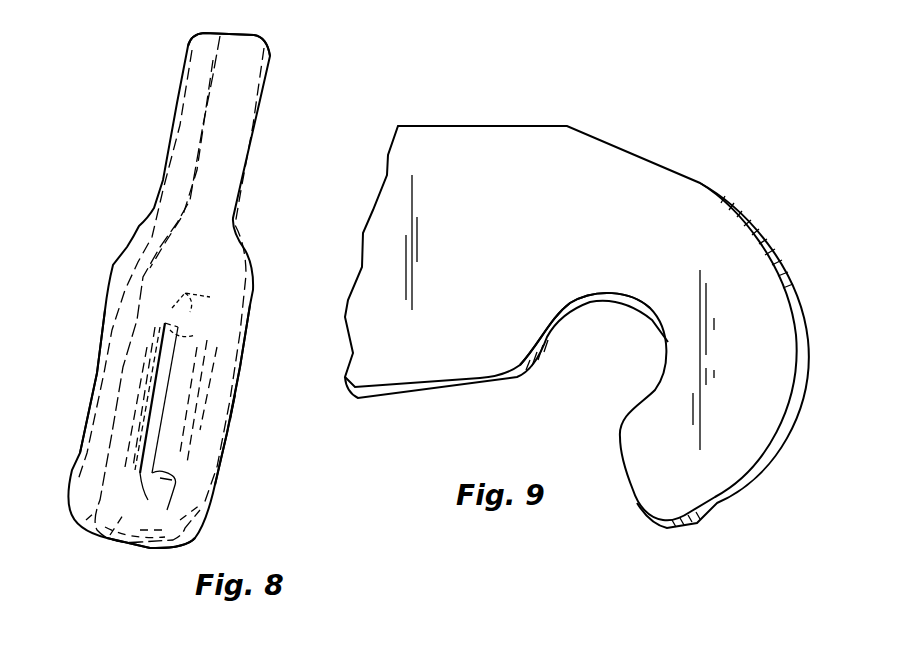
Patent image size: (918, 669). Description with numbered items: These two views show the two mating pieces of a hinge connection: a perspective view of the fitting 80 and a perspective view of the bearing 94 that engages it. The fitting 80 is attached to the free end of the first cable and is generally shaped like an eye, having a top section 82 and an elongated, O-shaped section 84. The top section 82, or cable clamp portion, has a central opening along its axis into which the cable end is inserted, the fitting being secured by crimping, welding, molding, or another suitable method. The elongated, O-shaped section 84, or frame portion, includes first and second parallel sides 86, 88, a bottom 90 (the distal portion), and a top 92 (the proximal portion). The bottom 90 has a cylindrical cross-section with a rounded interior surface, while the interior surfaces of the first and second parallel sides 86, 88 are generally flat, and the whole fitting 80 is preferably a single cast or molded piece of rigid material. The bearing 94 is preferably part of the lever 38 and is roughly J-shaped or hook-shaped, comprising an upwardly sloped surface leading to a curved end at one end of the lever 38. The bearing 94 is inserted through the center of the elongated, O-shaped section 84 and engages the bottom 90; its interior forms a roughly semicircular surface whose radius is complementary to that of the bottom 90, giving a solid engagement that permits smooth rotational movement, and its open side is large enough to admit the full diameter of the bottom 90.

In FIG. 8, the fitting 80 is at (281, 128).
In FIG. 8, the top section 82 is at (250, 82).
In FIG. 8, the elongated, O-shaped section 84 is at (241, 355).
In FIG. 8, the first parallel side 86 is at (96, 352).
In FIG. 8, the second parallel side 88 is at (229, 432).
In FIG. 8, the bottom 90 is at (141, 552).
In FIG. 8, the top 92 is at (210, 297).
In FIG. 9, the lever 38 is at (392, 202).
In FIG. 9, the bearing 94 is at (708, 185).